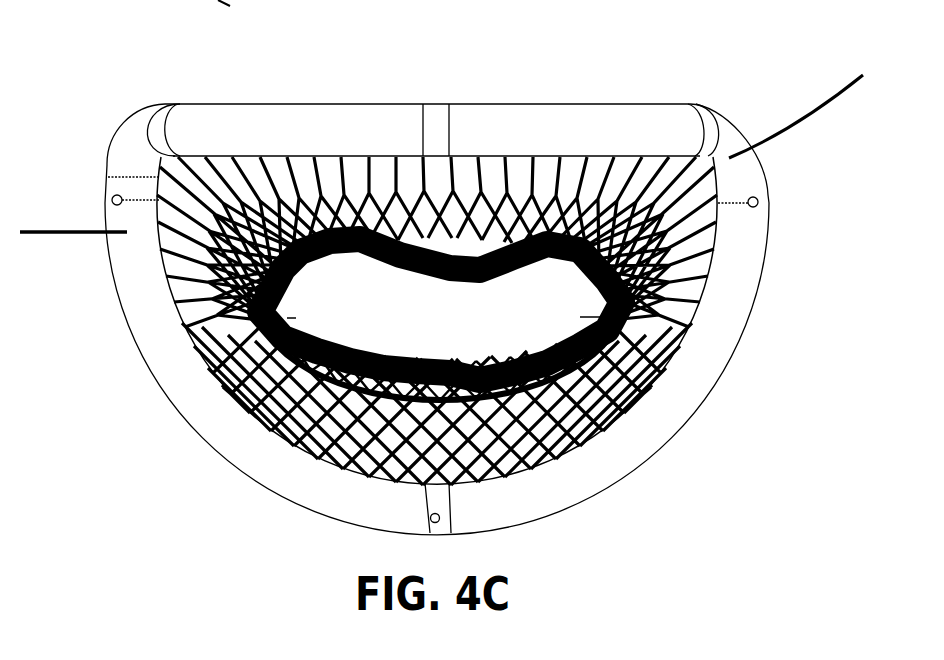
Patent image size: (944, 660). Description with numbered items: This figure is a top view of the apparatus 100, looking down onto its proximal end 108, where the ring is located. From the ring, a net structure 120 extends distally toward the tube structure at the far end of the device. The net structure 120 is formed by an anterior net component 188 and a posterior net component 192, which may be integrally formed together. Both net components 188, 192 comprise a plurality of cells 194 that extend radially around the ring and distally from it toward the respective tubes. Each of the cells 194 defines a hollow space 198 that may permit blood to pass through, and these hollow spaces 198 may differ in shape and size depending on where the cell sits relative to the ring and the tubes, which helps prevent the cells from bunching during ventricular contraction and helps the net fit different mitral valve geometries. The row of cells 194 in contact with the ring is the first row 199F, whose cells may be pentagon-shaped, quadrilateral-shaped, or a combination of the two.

The apparatus 100 is at (150, 66).
The proximal end 108 is at (384, 106).
The anterior net component 188 is at (622, 200).
The net structure 120 is at (660, 294).
The cells 194 is at (530, 348).
The posterior net component 192 is at (255, 375).
The hollow space 198 is at (640, 390).
The first row 199F is at (172, 270).